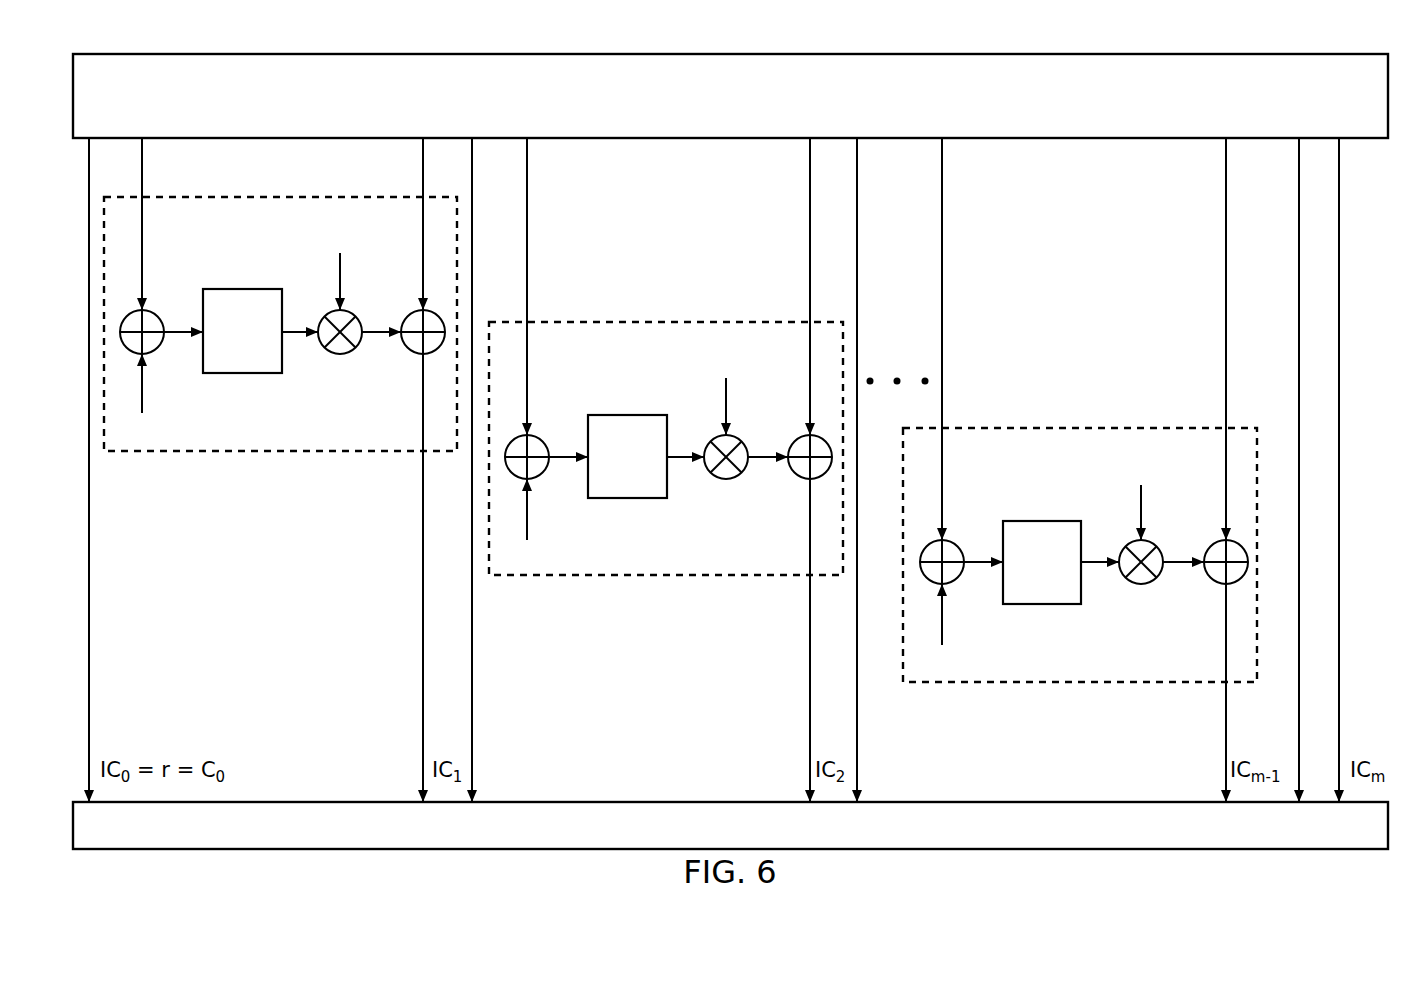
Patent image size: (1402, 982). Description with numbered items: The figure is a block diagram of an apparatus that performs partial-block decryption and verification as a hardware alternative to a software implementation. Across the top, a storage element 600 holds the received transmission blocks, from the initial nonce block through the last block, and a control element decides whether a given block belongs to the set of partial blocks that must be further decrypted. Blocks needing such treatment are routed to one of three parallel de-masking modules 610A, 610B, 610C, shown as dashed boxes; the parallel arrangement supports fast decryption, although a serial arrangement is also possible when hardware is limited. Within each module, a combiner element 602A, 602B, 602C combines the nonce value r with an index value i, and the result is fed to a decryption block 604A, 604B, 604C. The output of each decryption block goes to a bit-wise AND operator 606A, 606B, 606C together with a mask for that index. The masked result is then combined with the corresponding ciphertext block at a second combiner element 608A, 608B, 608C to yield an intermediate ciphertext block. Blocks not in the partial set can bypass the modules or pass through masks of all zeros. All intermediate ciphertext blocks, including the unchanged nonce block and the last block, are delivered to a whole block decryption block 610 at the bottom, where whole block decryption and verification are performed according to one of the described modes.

The storage element 600 is at (1057, 54).
The whole block decryption block 610 is at (1055, 802).
The de-masking module 610A is at (270, 197).
The de-masking module 610B is at (657, 322).
The de-masking module 610C is at (1073, 428).
The combiner element 602A is at (151, 318).
The decryption block 604A is at (236, 289).
The bit-wise AND operator 606A is at (340, 354).
The combiner element 608A is at (416, 314).
The combiner element 602B is at (536, 443).
The decryption block 604B is at (622, 415).
The bit-wise AND operator 606B is at (726, 479).
The combiner element 608B is at (803, 440).
The combiner element 602C is at (951, 550).
The decryption block 604C is at (1036, 521).
The bit-wise AND operator 606C is at (1141, 584).
The combiner element 608C is at (1219, 547).